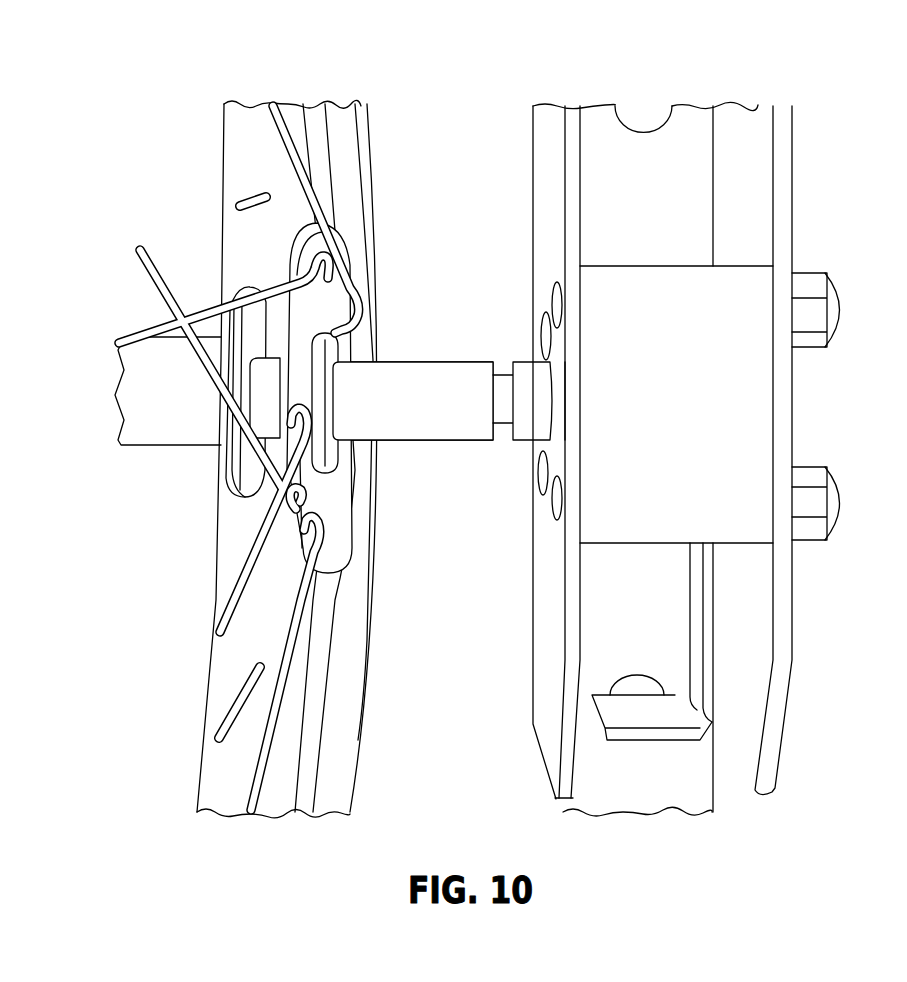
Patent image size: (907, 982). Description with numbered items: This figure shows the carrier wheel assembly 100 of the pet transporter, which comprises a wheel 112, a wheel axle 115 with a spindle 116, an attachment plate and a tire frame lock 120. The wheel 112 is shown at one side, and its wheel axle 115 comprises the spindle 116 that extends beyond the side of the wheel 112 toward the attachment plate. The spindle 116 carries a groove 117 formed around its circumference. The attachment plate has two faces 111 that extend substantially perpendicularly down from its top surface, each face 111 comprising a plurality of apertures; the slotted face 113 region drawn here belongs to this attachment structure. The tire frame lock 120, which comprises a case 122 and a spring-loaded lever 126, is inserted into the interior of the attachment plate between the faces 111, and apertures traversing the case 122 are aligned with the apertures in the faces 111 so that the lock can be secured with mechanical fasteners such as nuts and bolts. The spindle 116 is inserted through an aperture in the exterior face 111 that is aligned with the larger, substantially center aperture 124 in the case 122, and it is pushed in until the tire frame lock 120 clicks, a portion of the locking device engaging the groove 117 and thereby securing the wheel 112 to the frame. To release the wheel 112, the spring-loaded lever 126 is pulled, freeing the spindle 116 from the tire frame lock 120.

The carrier wheel assembly 100 is at (467, 126).
The attachment plate face 111 is at (546, 727).
The wheel 112 is at (363, 106).
The slotted bracket flange 113 is at (557, 275).
The wheel axle 115 is at (278, 475).
The spindle 116 is at (410, 362).
The groove 117 is at (502, 420).
The tire frame lock 120 is at (747, 515).
The tire frame lock case 122 is at (760, 290).
The center aperture 124 is at (580, 367).
The spring-loaded lever 126 is at (672, 722).